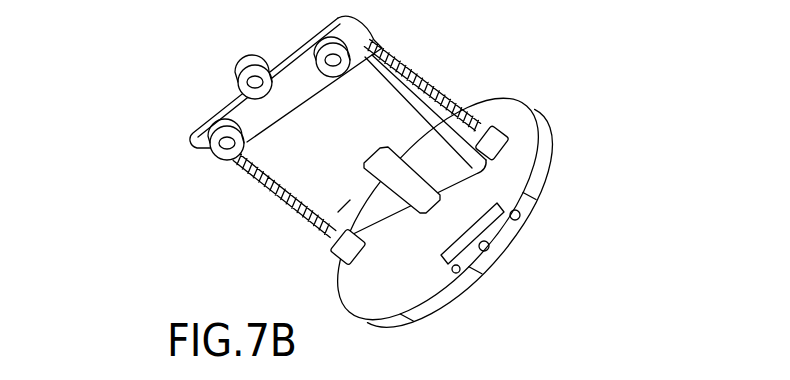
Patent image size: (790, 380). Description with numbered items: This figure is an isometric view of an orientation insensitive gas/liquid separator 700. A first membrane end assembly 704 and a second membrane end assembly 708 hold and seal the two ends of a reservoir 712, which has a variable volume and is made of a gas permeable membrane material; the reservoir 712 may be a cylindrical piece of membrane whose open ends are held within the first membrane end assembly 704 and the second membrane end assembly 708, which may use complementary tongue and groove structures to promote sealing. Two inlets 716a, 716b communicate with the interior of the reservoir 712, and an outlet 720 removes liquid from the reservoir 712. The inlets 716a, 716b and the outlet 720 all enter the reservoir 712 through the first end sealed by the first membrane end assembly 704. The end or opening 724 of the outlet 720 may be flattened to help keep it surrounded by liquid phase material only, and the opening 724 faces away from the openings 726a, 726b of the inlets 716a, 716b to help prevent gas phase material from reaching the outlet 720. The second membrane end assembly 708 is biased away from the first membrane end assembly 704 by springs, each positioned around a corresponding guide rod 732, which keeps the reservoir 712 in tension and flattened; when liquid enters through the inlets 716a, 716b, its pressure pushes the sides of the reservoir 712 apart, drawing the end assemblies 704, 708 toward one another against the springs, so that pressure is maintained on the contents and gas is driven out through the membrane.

The orientation insensitive gas/liquid separator 700 is at (158, 95).
The first membrane end assembly 704 is at (546, 143).
The second membrane end assembly 708 is at (208, 150).
The reservoir 712 is at (268, 192).
The inlet 716a is at (523, 218).
The inlet 716b is at (460, 271).
The outlet 720 is at (490, 246).
The opening of the outlet 724 is at (350, 200).
The opening of the inlet 726a is at (465, 170).
The opening of the inlet 726b is at (458, 262).
The guide rod 732 is at (250, 176).